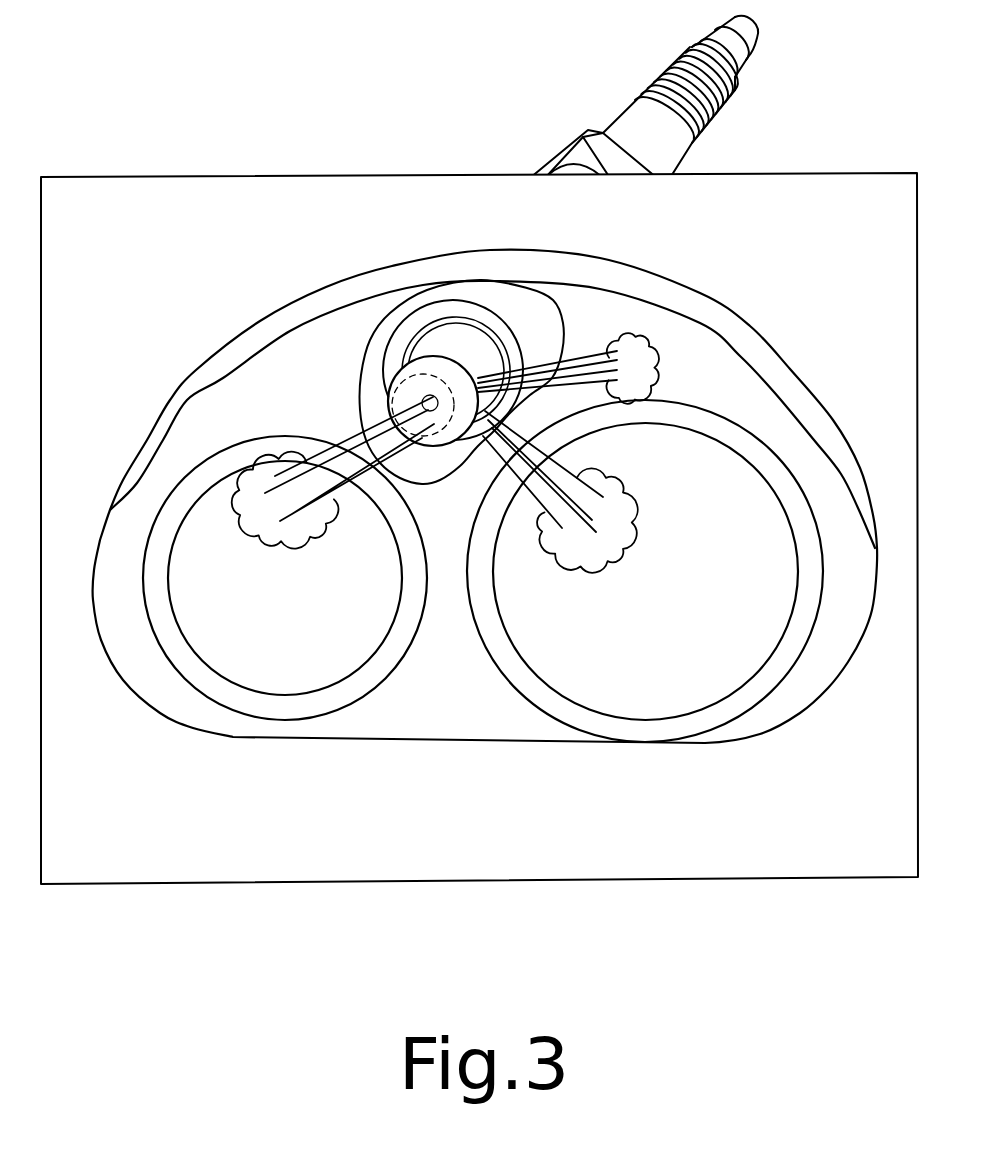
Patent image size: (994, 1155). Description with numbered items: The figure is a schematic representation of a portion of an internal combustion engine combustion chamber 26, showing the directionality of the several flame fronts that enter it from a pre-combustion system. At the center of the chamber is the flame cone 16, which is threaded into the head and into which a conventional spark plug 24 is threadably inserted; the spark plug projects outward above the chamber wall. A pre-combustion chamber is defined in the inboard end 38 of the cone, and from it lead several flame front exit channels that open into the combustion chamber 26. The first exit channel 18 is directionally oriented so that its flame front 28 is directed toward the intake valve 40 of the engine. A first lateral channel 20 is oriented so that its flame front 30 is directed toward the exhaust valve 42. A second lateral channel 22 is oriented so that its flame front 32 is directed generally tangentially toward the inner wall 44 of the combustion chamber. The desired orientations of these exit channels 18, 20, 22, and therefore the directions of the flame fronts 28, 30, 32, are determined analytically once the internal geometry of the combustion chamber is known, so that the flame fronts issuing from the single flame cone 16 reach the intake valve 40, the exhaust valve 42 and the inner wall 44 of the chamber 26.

The flame cone 16 is at (500, 308).
The flame front exit channel 18 is at (388, 357).
The first lateral channel 20 is at (440, 480).
The second lateral channel 22 is at (505, 348).
The spark plug 24 is at (632, 125).
The combustion chamber 26 is at (733, 397).
The flame front 28 is at (247, 503).
The flame front 30 is at (613, 530).
The flame front 32 is at (630, 343).
The inboard end 38 is at (425, 370).
The intake valve 40 is at (320, 650).
The exhaust valve 42 is at (720, 672).
The inner wall 44 is at (786, 393).